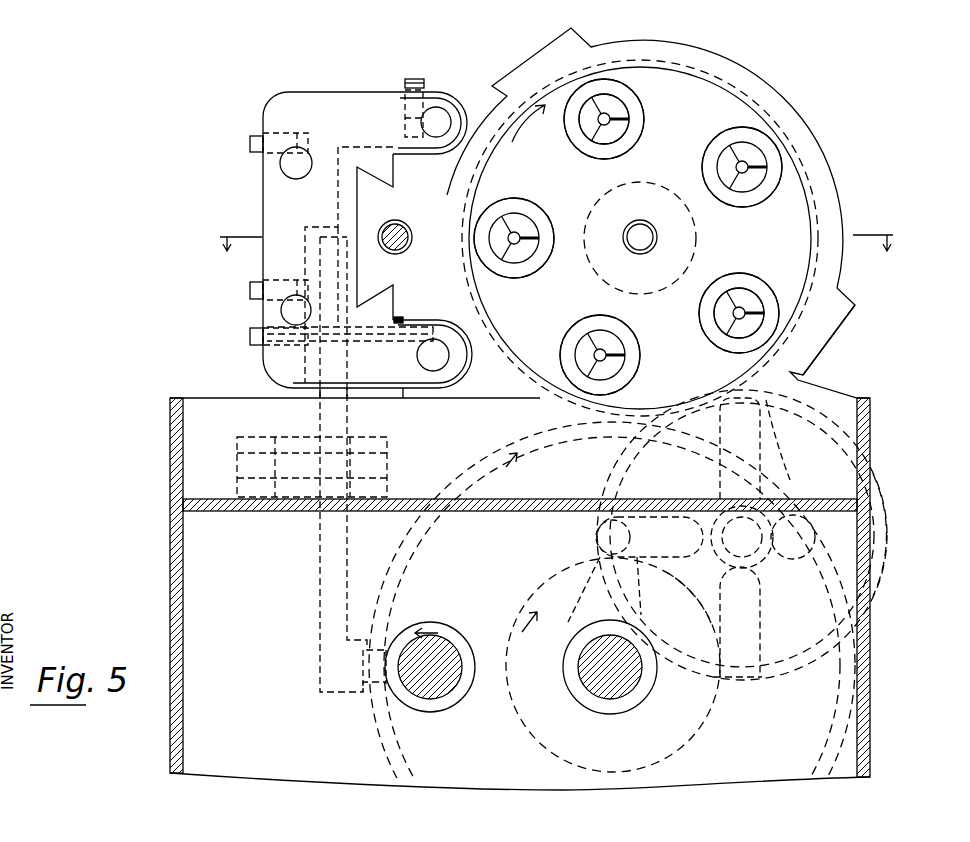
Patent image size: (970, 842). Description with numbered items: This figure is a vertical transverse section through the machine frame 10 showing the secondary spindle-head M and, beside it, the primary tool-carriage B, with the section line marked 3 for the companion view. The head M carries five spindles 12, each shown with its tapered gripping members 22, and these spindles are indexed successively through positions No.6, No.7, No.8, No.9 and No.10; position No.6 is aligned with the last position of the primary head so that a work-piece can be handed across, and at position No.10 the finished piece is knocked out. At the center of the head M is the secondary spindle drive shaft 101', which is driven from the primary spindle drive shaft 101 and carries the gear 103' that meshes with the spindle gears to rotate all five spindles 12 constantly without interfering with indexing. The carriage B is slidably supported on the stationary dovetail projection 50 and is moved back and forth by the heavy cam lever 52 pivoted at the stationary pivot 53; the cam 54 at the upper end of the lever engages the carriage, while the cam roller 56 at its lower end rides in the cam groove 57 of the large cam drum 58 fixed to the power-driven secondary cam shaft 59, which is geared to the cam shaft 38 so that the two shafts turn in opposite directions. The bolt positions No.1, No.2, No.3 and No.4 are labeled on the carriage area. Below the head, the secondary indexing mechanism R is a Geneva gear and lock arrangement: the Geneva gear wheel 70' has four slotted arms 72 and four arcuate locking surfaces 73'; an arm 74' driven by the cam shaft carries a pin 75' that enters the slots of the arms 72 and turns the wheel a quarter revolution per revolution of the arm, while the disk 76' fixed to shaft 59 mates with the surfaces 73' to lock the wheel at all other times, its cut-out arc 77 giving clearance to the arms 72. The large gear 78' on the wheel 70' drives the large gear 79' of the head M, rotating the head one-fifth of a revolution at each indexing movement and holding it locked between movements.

The housing 10 is at (803, 120).
The secondary spindle-head M is at (717, 82).
The primary tool-carriage B is at (333, 92).
The spindles 12 is at (703, 153).
The tapered gripping members 22 is at (620, 111).
The stationary dovetail projection 50 is at (375, 237).
The cam lever 52 is at (340, 380).
The stationary pivot 53 is at (322, 457).
The cam 54 is at (320, 253).
The cam roller 56 is at (377, 693).
The cam groove 57 is at (400, 583).
The cam drum 58 is at (405, 540).
The secondary cam shaft 59 is at (620, 685).
The cam shaft 38 is at (437, 690).
The slotted arms 72 is at (763, 680).
The arcuate locking surfaces 73' is at (746, 548).
The arm 74' is at (580, 587).
The pin 75' is at (617, 537).
The disk 76' is at (613, 665).
The arc cut-out 77 is at (668, 607).
The large gear 78' is at (902, 526).
The large gear 79' is at (836, 340).
The Geneva gear wheel 70' is at (906, 587).
The primary spindle drive shaft 101 is at (418, 228).
The secondary spindle drive shaft 101' is at (638, 225).
The gear 103' is at (664, 238).
The secondary indexing mechanism R is at (765, 652).
The section line 3- 3 is at (558, 251).
The position No. 1 No.1 is at (435, 108).
The position No. 2 No.2 is at (310, 155).
The position No. 3 No.3 is at (283, 312).
The position No. 4 No.4 is at (443, 361).
The position No. 6 No.6 is at (532, 213).
The position No. 7 No.7 is at (633, 103).
The position No. 8 No.8 is at (746, 173).
The position No. 9 No.9 is at (745, 305).
The position No. 10 No.10 is at (619, 355).